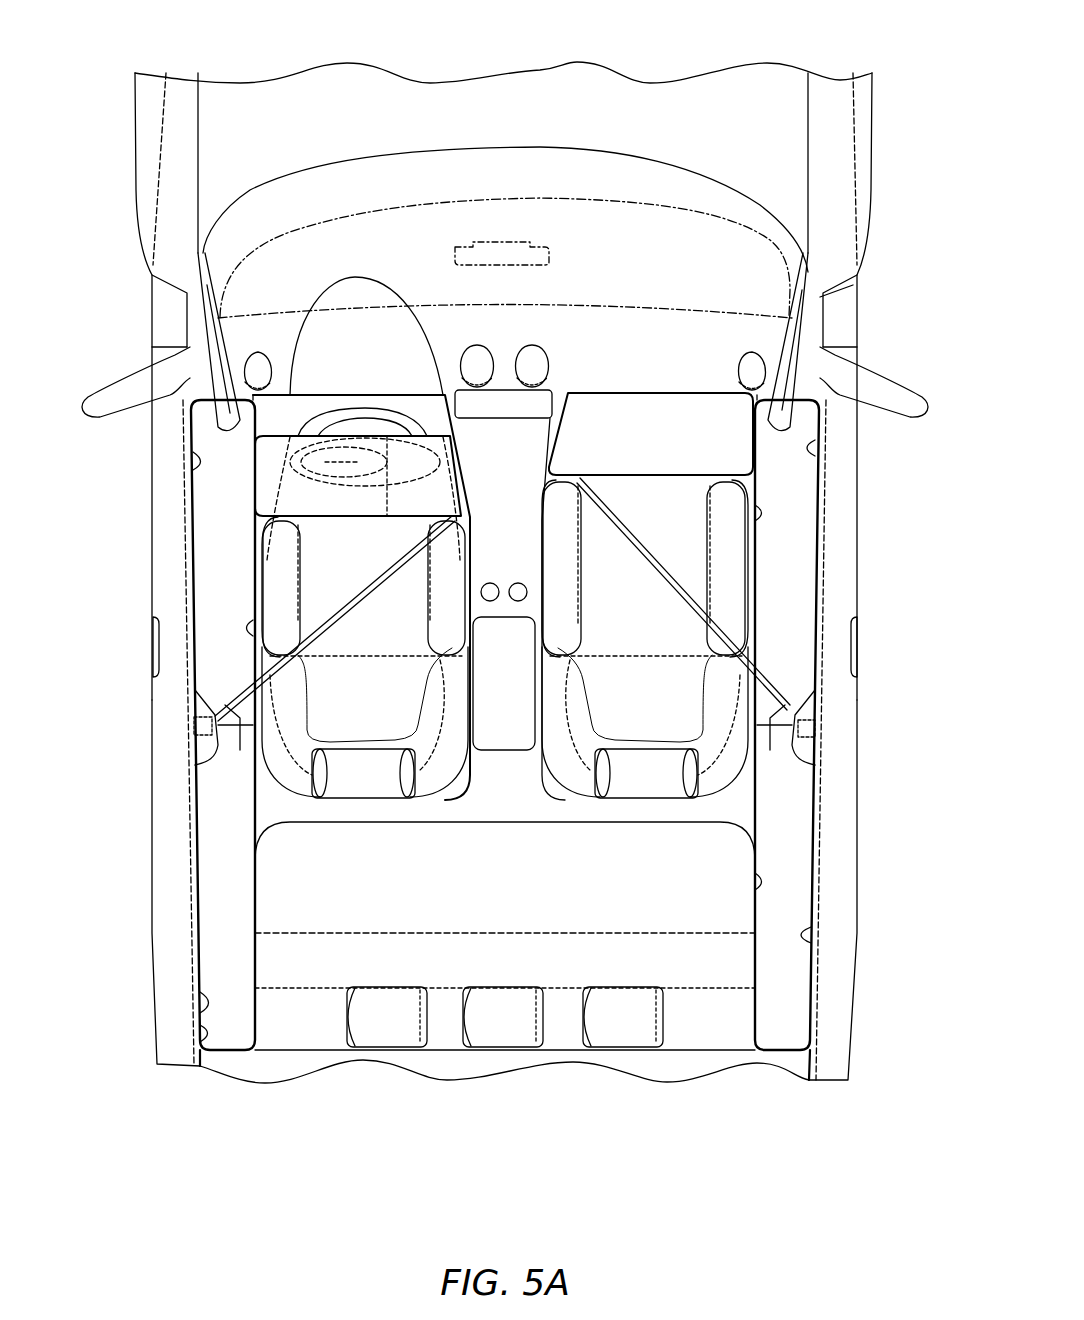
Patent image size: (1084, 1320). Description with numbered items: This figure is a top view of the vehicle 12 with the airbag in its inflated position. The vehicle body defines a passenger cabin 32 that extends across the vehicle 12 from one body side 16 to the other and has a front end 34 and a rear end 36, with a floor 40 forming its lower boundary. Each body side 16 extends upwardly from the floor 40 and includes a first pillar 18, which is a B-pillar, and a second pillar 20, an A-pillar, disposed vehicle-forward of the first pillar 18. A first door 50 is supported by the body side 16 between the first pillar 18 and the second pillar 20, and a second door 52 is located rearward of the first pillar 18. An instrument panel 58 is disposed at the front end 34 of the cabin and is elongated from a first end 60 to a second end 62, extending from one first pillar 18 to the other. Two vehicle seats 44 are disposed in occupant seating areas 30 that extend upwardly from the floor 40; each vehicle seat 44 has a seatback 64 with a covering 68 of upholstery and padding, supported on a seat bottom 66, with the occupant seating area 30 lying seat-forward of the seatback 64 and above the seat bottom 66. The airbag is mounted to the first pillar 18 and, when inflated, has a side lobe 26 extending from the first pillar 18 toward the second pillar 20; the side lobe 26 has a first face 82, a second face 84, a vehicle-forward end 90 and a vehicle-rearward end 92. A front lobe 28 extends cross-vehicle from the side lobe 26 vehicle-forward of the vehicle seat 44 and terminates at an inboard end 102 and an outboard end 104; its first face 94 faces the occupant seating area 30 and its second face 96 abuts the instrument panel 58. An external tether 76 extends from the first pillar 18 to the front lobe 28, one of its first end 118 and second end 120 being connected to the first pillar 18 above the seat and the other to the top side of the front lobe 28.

The vehicle 12 is at (130, 960).
The body side 16 is at (200, 720).
The first pillar 18 is at (205, 775).
The second pillar 20 is at (205, 330).
The side lobe 26 is at (253, 600).
The front lobe 28 is at (345, 455).
The occupant seating area 30 is at (330, 600).
The passenger cabin 32 is at (250, 870).
The front end 34 is at (492, 330).
The rear end 36 is at (385, 903).
The floor 40 is at (270, 810).
The vehicle seat 44 is at (265, 540).
The first door 50 is at (148, 530).
The second door 52 is at (150, 937).
The instrument panel 58 is at (648, 337).
The first end 60 is at (778, 352).
The second end 62 is at (238, 335).
The seatback 64 is at (262, 683).
The seat bottom 66 is at (262, 573).
The covering 68 is at (347, 728).
The external tether 76 is at (357, 603).
The first face 82 is at (253, 627).
The second face 84 is at (197, 460).
The vehicle-forward end 90 is at (205, 413).
The vehicle-rearward end 92 is at (237, 712).
The first face 94 is at (333, 503).
The second face 96 is at (622, 410).
The inboard end 102 is at (445, 463).
The outboard end 104 is at (265, 425).
The first end 118 is at (578, 490).
The second end 120 is at (855, 655).